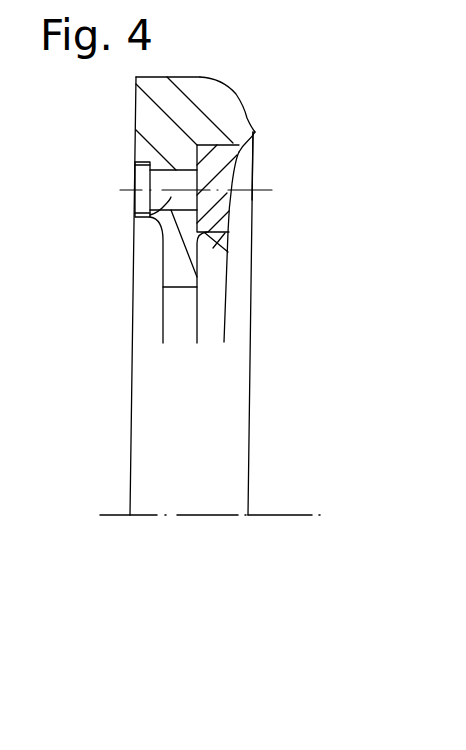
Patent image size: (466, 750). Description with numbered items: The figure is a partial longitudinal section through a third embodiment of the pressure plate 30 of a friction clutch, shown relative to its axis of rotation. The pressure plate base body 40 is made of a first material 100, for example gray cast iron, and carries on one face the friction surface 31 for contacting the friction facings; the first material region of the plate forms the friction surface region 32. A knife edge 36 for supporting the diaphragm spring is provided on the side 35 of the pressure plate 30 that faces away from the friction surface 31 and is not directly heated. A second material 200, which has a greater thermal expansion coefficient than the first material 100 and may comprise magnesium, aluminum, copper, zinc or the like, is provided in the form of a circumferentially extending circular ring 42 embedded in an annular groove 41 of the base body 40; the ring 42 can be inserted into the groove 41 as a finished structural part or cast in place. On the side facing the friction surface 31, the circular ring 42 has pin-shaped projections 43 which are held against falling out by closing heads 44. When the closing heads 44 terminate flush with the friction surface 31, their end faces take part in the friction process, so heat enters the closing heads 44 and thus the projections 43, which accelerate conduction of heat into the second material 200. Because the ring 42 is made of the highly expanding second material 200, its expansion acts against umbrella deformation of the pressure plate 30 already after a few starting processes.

The pressure plate 30 is at (129, 352).
The friction surface 31 is at (136, 127).
The friction surface region 32 is at (136, 93).
The side facing away from the friction surface 35 is at (267, 118).
The knife edge 36 is at (256, 131).
The pressure plate base body 40 is at (176, 322).
The annular groove 41 is at (206, 236).
The circular ring 42 is at (229, 180).
The pin-shaped projections 43 is at (143, 218).
The closing heads 44 is at (135, 173).
The first material 100 is at (217, 100).
The second material 200 is at (228, 214).